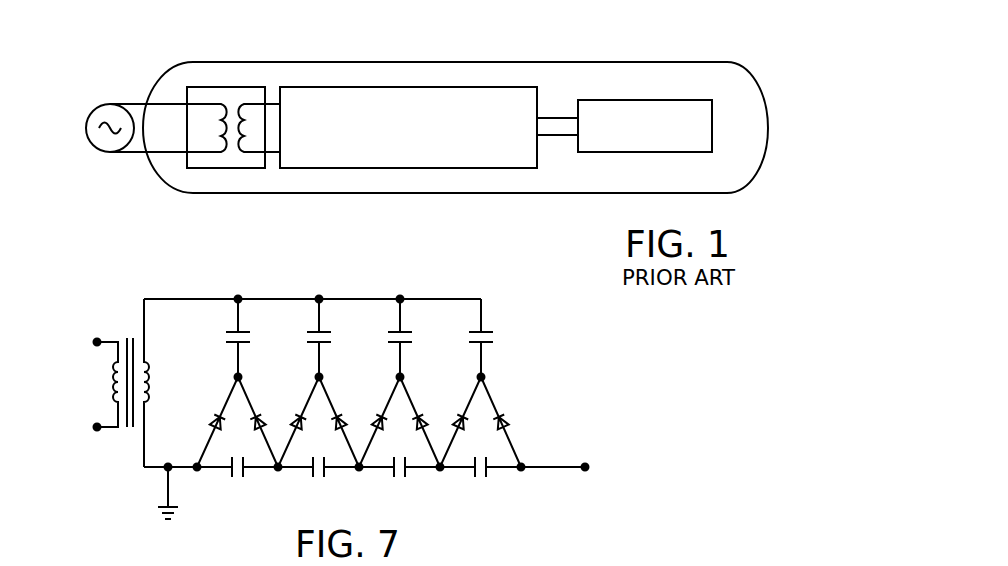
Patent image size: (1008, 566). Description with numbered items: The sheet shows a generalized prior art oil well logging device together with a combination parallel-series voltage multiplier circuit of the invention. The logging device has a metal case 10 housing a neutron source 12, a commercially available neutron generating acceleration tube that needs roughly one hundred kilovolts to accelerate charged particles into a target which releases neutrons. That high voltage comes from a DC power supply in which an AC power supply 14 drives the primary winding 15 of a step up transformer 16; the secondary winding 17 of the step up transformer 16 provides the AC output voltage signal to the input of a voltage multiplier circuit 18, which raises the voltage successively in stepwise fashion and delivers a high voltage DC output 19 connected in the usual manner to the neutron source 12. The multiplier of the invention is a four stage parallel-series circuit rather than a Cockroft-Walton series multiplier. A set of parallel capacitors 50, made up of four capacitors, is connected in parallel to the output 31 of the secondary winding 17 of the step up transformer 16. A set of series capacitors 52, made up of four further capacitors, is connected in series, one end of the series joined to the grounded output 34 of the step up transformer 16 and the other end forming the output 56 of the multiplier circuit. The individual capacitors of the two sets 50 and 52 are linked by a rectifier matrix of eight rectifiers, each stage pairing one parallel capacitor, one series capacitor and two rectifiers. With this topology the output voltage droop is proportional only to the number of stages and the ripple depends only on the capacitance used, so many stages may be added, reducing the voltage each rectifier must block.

In FIG. 1, the metal case 10 is at (552, 62).
In FIG. 1, the neutron source 12 is at (657, 100).
In FIG. 1, the AC power supply 14 is at (92, 107).
In FIG. 1, the primary winding 15 is at (222, 138).
In FIG. 7, the primary winding 15 is at (115, 388).
In FIG. 1, the step up transformer 16 is at (230, 87).
In FIG. 7, the step up transformer 16 is at (108, 322).
In FIG. 1, the secondary winding 17 is at (243, 137).
In FIG. 7, the secondary winding 17 is at (150, 380).
In FIG. 1, the voltage multiplier circuit 18 is at (423, 87).
In FIG. 1, the high voltage DC output 19 is at (560, 136).
In FIG. 7, the output of the secondary winding 31 is at (183, 299).
In FIG. 7, the grounded output 34 is at (148, 473).
In FIG. 7, the set of parallel capacitors 50 is at (505, 335).
In FIG. 7, the set of series capacitors 52 is at (515, 483).
In FIG. 7, the output of the multiplier circuit 56 is at (585, 467).